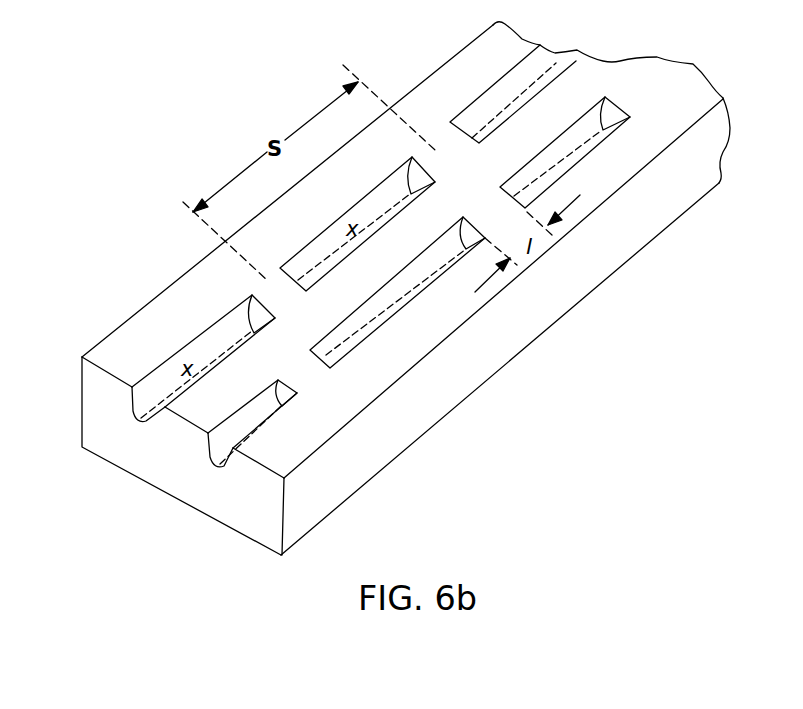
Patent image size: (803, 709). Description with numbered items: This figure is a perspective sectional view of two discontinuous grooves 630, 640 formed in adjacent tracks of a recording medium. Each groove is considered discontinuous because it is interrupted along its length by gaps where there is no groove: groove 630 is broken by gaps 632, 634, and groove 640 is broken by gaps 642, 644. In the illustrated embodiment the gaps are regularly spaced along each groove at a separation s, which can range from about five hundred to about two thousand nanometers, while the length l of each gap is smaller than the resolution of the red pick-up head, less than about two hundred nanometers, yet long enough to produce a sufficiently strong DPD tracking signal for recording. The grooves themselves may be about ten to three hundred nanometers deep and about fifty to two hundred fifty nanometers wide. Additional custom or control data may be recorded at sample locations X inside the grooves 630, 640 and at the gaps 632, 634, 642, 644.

The discontinuous groove 630 is at (131, 432).
The gap 632 is at (268, 292).
The gap 634 is at (445, 148).
The discontinuous groove 640 is at (208, 473).
The gap 642 is at (312, 375).
The gap 644 is at (495, 211).